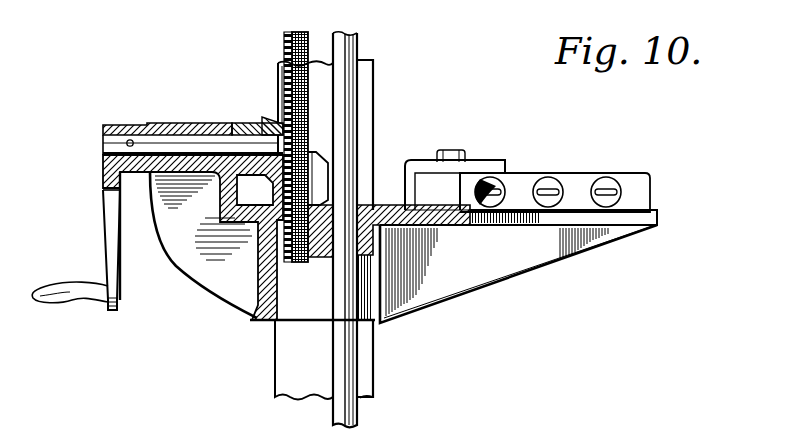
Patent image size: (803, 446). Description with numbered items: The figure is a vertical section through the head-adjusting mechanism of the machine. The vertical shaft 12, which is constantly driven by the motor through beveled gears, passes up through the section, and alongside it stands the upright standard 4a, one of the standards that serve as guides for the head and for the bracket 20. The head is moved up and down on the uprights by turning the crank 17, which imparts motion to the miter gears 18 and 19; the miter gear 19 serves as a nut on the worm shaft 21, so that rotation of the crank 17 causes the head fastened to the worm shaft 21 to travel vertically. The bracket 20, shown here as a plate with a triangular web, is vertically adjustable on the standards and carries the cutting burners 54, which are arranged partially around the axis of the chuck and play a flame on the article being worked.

The crank 17 is at (110, 224).
The miter gear 18 is at (251, 126).
The standard 4a is at (367, 77).
The miter gear 19 is at (323, 172).
The bracket 20 is at (481, 257).
The vertical shaft 12 is at (357, 414).
The worm shaft 21 is at (290, 53).
The cutting burners 54 is at (598, 189).